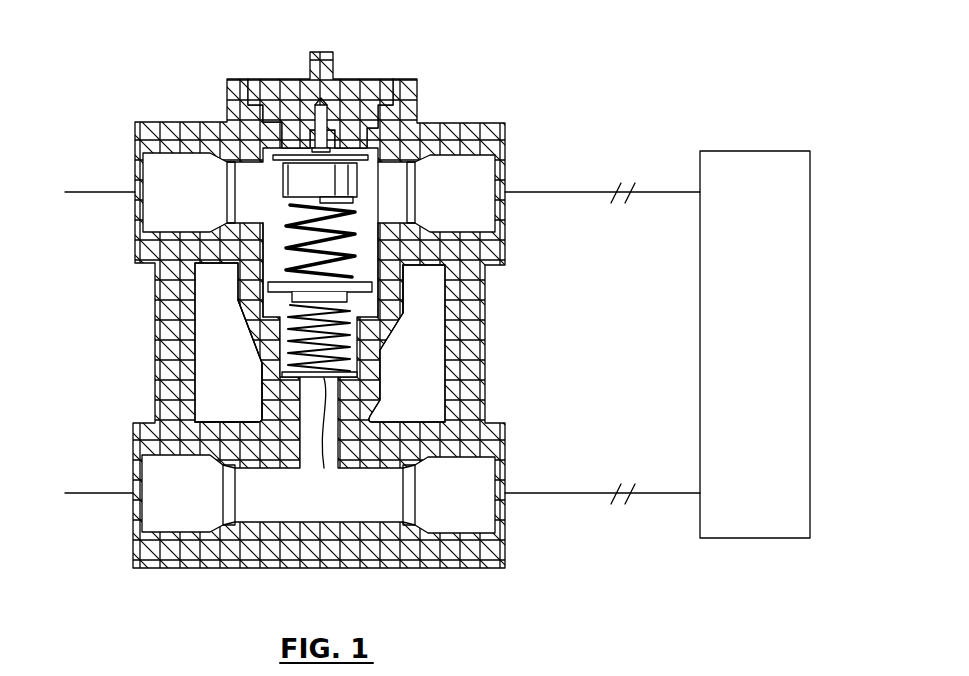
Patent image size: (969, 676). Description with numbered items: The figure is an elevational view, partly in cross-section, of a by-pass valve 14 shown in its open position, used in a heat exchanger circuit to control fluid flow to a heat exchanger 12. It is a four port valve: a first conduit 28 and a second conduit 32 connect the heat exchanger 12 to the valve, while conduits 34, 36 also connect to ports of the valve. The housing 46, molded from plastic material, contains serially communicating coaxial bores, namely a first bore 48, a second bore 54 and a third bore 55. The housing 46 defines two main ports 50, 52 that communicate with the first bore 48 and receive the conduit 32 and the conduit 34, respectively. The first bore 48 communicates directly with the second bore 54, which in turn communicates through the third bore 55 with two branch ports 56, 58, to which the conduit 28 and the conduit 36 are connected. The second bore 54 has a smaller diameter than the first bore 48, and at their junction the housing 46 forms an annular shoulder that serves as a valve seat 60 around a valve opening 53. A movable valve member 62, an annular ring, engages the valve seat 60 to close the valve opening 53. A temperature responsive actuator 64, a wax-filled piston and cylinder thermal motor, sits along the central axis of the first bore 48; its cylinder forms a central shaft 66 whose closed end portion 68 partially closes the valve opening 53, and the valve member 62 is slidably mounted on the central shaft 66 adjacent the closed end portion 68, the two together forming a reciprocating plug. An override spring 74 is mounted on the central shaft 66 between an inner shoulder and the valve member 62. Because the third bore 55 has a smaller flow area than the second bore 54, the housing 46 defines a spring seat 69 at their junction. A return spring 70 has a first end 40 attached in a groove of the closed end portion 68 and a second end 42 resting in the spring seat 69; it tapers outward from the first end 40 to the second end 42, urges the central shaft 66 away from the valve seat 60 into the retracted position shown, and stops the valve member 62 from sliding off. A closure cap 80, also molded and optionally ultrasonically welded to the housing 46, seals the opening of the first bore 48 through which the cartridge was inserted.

The heat exchanger 12 is at (735, 151).
The by-pass valve 14 is at (332, 289).
The first conduit 28 is at (558, 493).
The second conduit 32 is at (558, 192).
The conduit 34 is at (84, 192).
The conduit 36 is at (84, 493).
The first end of return spring 40 is at (262, 308).
The second end of return spring 42 is at (268, 396).
The housing 46 is at (484, 122).
The first bore 48 is at (215, 264).
The main port 50 is at (423, 206).
The main port 52 is at (158, 222).
The valve opening 53 is at (385, 342).
The second bore 54 is at (264, 362).
The third bore 55 is at (258, 417).
The branch port 56 is at (487, 515).
The branch port 58 is at (155, 510).
The valve seat 60 is at (374, 290).
The valve member 62 is at (405, 268).
The temperature responsive actuator 64 is at (290, 184).
The central shaft 66 is at (375, 196).
The closed end portion 68 is at (287, 340).
The spring seat 69 is at (325, 385).
The return spring 70 is at (355, 376).
The override spring 74 is at (293, 228).
The closure cap 80 is at (355, 78).